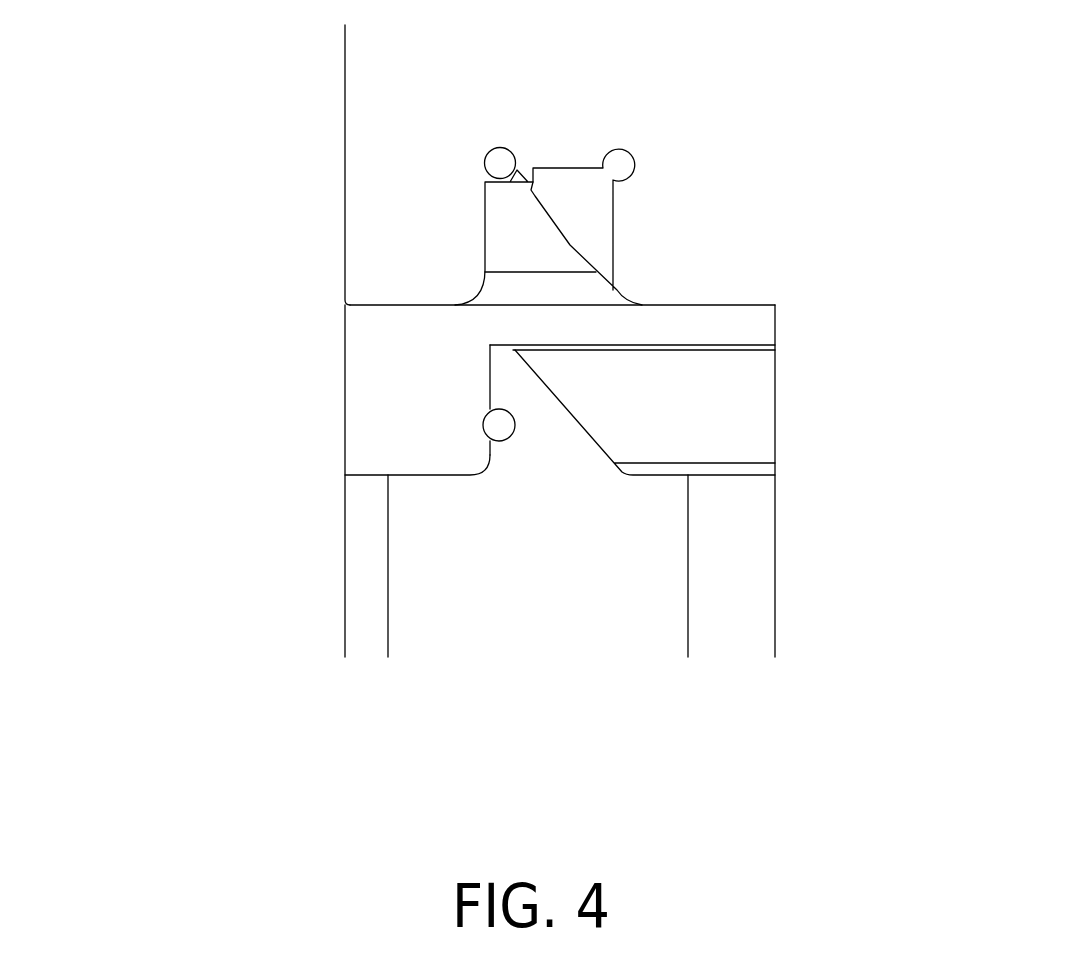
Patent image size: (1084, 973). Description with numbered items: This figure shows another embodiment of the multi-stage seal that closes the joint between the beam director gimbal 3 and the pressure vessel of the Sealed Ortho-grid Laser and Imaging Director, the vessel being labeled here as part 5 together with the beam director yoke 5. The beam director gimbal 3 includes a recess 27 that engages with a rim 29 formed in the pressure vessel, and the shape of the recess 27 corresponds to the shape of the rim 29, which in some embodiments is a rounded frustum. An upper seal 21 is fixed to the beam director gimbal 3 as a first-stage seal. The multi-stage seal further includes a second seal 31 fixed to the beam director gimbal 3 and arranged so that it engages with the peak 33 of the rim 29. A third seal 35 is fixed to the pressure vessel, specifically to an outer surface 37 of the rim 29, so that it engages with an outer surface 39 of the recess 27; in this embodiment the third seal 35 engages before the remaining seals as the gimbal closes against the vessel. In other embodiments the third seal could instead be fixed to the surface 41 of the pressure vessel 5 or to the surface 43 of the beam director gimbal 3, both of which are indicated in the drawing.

The beam director gimbal 3 is at (350, 118).
The beam director yoke 5 is at (348, 606).
The upper seal 21 is at (614, 235).
The recess 27 is at (498, 227).
The rim 29 is at (595, 436).
The second seal 31 is at (507, 158).
The peak 33 is at (497, 345).
The third seal 35 is at (483, 423).
The outer surface of the rim 37 is at (488, 378).
The outer surface of the recess 39 is at (483, 267).
The surface of the pressure vessel 41 is at (430, 480).
The surface of the beam director gimbal 43 is at (365, 305).